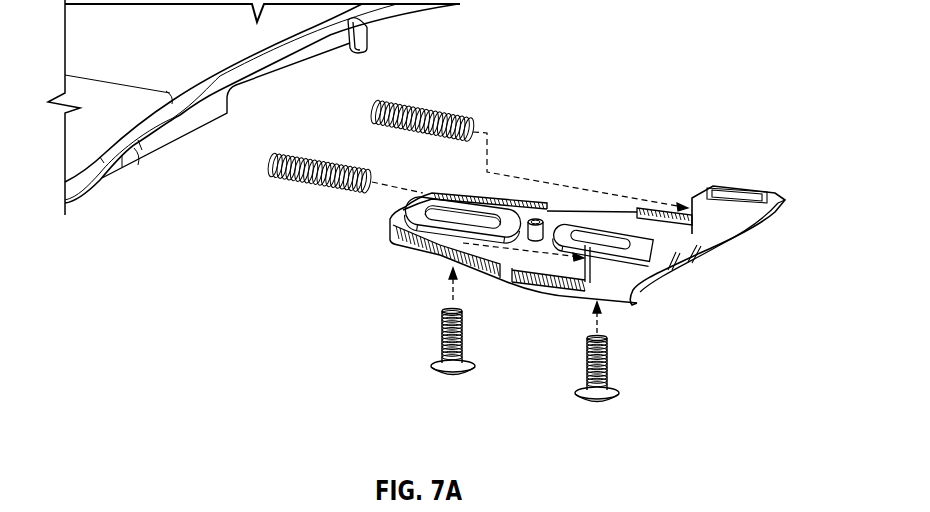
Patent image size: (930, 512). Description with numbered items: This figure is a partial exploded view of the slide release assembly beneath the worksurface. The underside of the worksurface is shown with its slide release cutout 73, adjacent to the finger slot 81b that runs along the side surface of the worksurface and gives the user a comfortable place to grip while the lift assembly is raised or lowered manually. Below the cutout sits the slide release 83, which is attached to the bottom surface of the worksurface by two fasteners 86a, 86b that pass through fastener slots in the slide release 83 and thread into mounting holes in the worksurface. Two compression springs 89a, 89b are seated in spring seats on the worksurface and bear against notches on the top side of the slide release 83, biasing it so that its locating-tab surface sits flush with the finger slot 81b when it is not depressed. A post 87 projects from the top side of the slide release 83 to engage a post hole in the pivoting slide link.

The slide release cutout 73 is at (340, 47).
The finger slot 81b is at (182, 127).
The slide release 83 is at (747, 232).
The fastener 86a is at (455, 373).
The fastener 86b is at (593, 400).
The post 87 is at (541, 227).
The spring 89a is at (430, 107).
The spring 89b is at (310, 157).